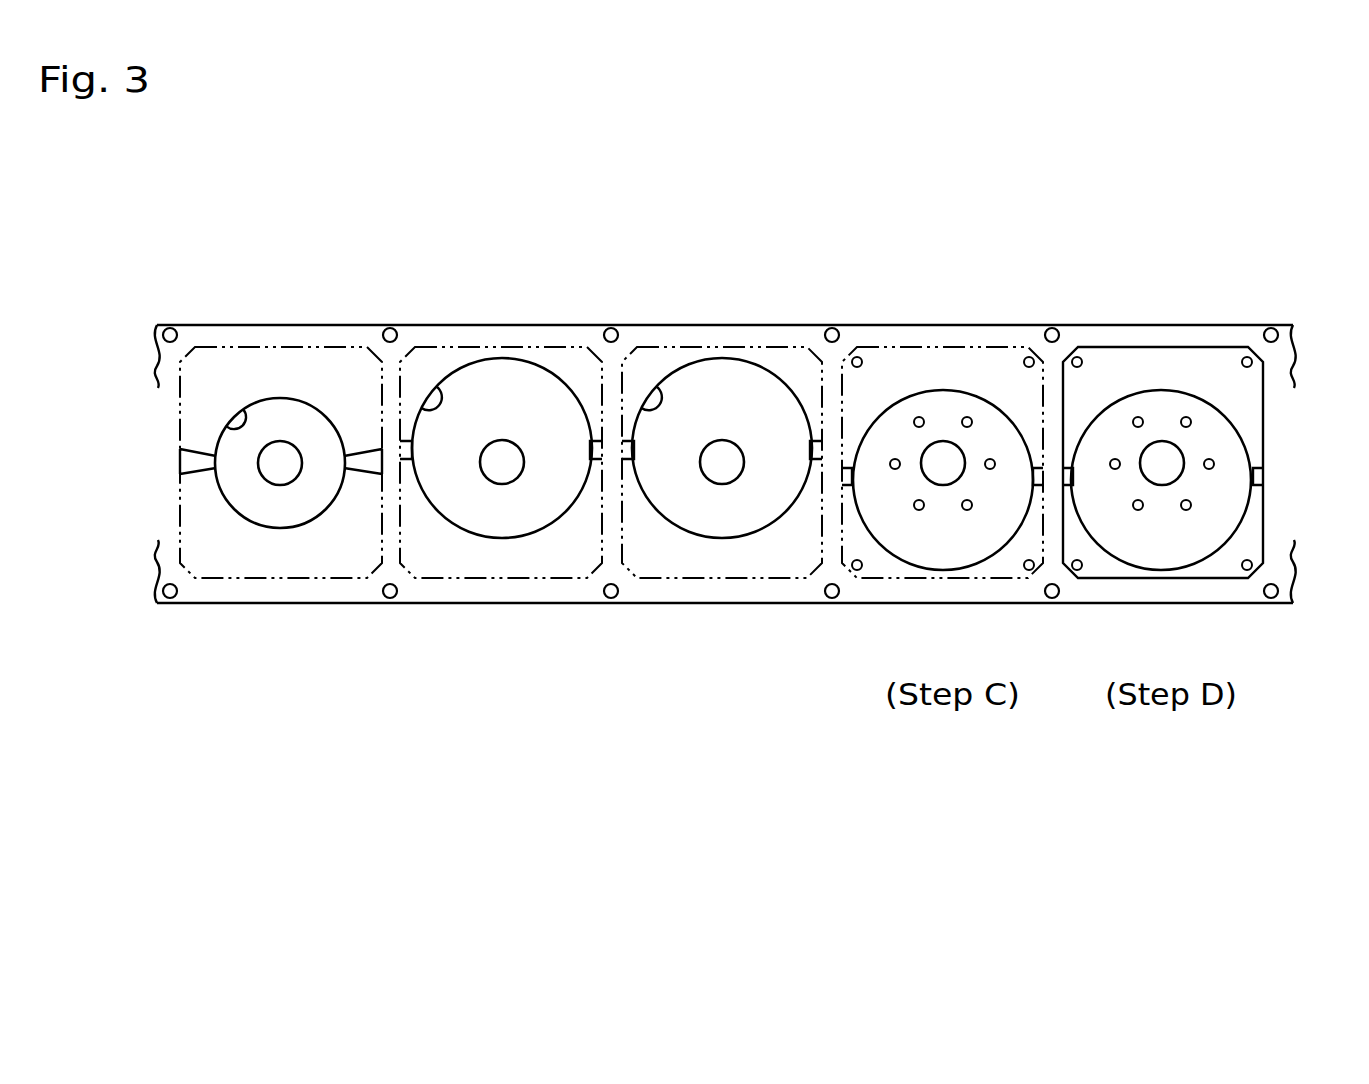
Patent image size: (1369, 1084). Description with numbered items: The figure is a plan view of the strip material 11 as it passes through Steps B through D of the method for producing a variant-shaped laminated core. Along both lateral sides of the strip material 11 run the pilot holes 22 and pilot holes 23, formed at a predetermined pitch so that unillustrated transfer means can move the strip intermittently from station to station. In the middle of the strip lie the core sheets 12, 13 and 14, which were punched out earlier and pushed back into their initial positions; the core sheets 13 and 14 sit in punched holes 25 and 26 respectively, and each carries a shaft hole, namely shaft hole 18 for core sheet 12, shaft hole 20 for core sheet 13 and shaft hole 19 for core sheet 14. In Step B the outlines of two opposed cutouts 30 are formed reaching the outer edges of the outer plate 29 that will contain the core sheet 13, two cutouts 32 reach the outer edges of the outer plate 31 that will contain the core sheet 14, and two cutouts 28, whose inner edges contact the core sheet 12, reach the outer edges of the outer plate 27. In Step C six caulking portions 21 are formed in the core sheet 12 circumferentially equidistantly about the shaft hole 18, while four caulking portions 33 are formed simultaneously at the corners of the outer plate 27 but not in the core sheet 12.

The strip material 11 is at (170, 484).
The core sheet 12 is at (904, 410).
The core sheet 13 is at (278, 408).
The core sheet 14 is at (481, 392).
The shaft hole 18 is at (954, 467).
The shaft hole 19 is at (510, 455).
The shaft hole 20 is at (285, 452).
The caulking portion 21 is at (967, 416).
The pilot hole 22 is at (170, 328).
The pilot hole 23 is at (170, 598).
The punched hole 25 is at (248, 398).
The punched hole 26 is at (444, 390).
The outer plate 27 is at (851, 537).
The cutout 28 is at (843, 478).
The outer plate 29 is at (278, 563).
The cutout 30 is at (193, 458).
The outer plate 31 is at (475, 563).
The cutout 32 is at (404, 455).
The caulking portion 33 is at (858, 356).